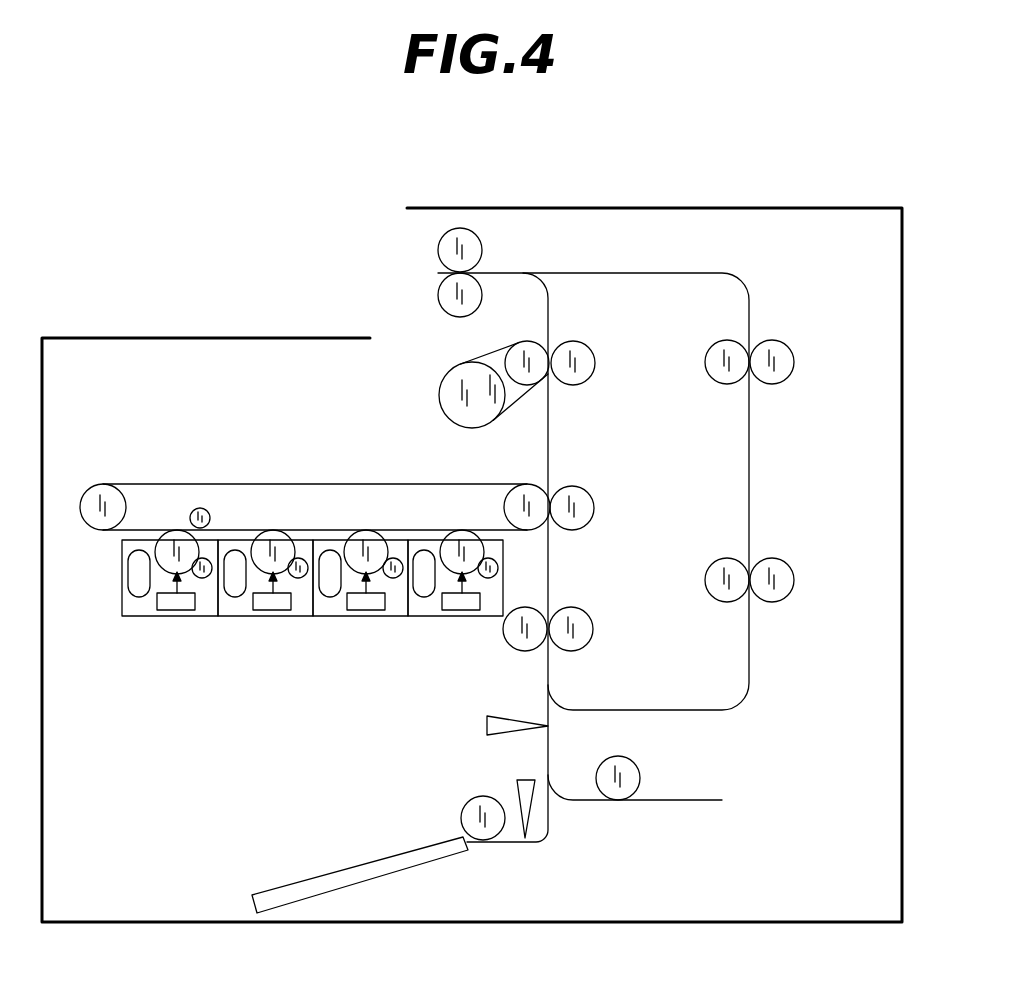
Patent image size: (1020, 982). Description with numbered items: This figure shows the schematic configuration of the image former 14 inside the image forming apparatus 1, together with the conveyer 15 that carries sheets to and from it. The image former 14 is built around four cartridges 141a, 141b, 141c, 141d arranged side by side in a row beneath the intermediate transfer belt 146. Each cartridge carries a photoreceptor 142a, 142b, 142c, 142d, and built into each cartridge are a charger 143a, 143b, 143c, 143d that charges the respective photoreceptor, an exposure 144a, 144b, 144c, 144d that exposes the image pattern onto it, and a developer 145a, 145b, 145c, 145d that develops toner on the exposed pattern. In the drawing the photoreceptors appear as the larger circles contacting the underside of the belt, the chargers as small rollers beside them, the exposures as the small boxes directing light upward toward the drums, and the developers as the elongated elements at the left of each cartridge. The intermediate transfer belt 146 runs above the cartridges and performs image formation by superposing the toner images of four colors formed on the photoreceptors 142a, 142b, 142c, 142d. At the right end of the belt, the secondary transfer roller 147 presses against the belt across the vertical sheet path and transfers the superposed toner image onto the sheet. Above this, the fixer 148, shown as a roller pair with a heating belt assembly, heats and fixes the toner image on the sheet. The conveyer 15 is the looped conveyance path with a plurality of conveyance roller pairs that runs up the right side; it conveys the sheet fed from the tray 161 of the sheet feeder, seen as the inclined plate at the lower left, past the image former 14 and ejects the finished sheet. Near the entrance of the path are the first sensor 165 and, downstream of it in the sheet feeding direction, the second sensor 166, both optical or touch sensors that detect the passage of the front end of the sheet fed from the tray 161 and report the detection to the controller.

The image forming apparatus 1 is at (775, 168).
The image former 14 is at (267, 758).
The conveyer 15 is at (685, 723).
The cartridge 141a is at (132, 617).
The cartridge 141b is at (230, 617).
The cartridge 141c is at (327, 617).
The cartridge 141d is at (420, 617).
The photoreceptor 142a is at (177, 530).
The photoreceptor 142b is at (271, 530).
The photoreceptor 142c is at (366, 530).
The photoreceptor 142d is at (462, 530).
The charger 143a is at (206, 559).
The charger 143b is at (302, 558).
The charger 143c is at (397, 559).
The charger 143d is at (490, 558).
The exposure 144a is at (182, 604).
The exposure 144b is at (276, 604).
The exposure 144c is at (375, 604).
The exposure 144d is at (467, 604).
The developer 145a is at (139, 583).
The developer 145b is at (235, 583).
The developer 145c is at (331, 583).
The developer 145d is at (425, 583).
The intermediate transfer belt 146 is at (137, 478).
The secondary transfer roller 147 is at (585, 512).
The fixer 148 is at (570, 335).
The tray 161 is at (382, 868).
The first sensor 165 is at (523, 792).
The second sensor 166 is at (490, 724).